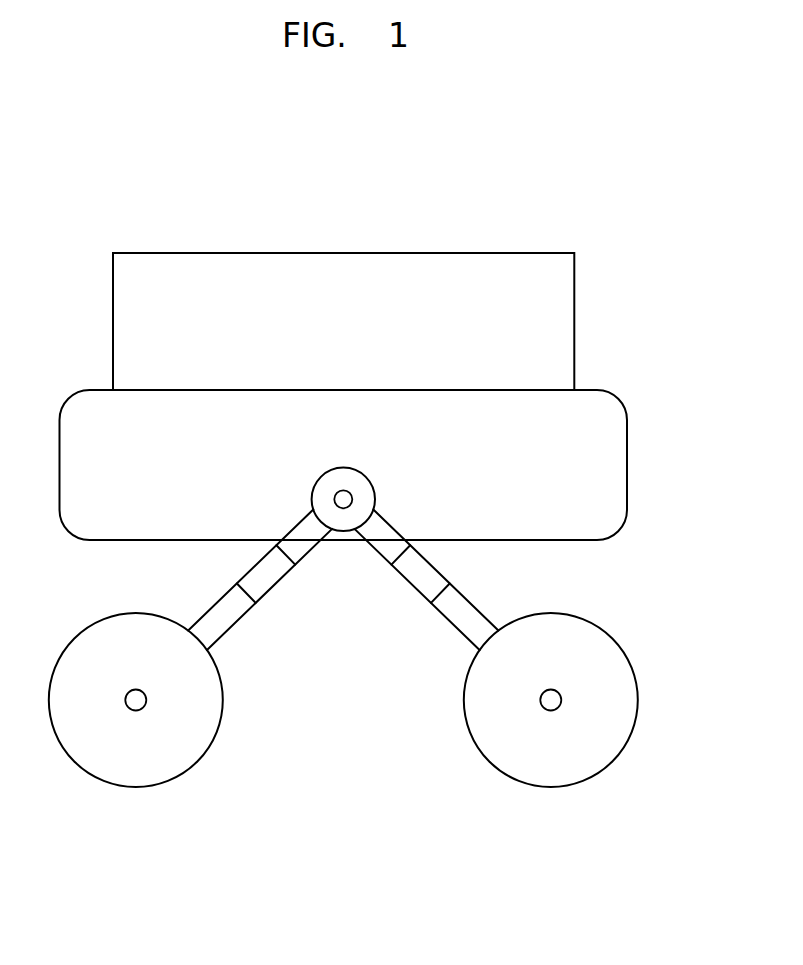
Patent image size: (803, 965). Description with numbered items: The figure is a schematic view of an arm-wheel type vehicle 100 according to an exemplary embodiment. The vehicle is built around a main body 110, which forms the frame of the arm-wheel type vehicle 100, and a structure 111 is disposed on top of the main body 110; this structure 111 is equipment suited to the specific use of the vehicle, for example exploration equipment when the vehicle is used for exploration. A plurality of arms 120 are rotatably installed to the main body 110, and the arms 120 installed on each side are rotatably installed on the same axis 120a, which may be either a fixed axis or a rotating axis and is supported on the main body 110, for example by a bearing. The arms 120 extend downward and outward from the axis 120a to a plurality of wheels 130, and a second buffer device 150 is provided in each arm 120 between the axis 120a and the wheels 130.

The arm-wheel type vehicle 100 is at (665, 186).
The main body 110 is at (618, 469).
The structure 111 is at (562, 328).
The arms 120 is at (467, 610).
The axis 120a is at (343, 503).
The wheels 130 is at (100, 768).
The second buffer device 150 is at (416, 572).